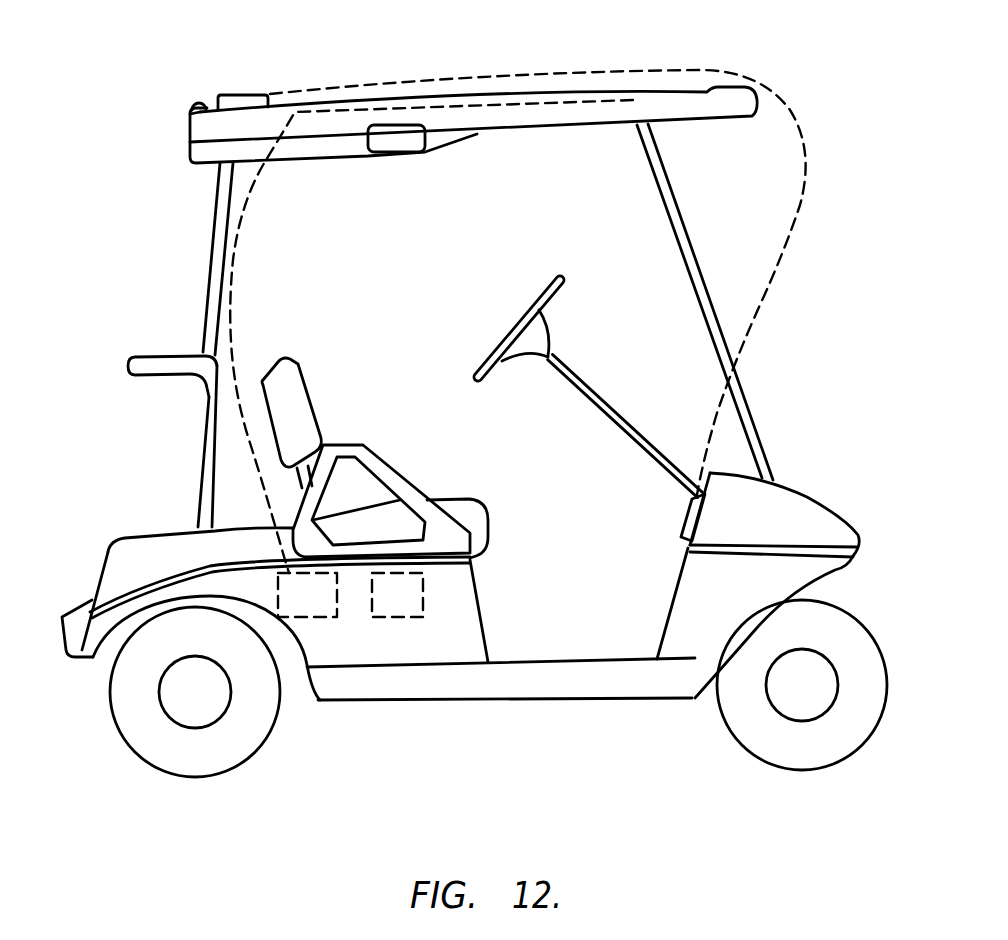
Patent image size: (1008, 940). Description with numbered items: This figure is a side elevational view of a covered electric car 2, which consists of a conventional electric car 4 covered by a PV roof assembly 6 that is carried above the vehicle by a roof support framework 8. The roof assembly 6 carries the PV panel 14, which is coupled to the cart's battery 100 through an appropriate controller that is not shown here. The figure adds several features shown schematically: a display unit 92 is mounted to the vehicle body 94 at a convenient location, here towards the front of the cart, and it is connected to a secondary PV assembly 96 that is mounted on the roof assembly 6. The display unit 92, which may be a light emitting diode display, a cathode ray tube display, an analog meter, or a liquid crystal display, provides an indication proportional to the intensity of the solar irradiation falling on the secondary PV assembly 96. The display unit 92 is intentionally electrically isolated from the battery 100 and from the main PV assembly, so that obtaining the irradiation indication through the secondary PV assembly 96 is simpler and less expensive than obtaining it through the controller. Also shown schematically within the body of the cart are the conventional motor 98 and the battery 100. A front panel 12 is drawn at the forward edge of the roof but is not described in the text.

The covered electric car 2 is at (832, 68).
The electric car 4 is at (823, 490).
The PV roof assembly 6 is at (695, 68).
The roof support framework 8 is at (208, 262).
The front visor panel 12 is at (208, 133).
The PV panel 14 is at (407, 105).
The display unit 92 is at (688, 516).
The vehicle body 94 is at (843, 533).
The secondary PV assembly 96 is at (246, 96).
The motor 98 is at (413, 617).
The battery 100 is at (312, 617).